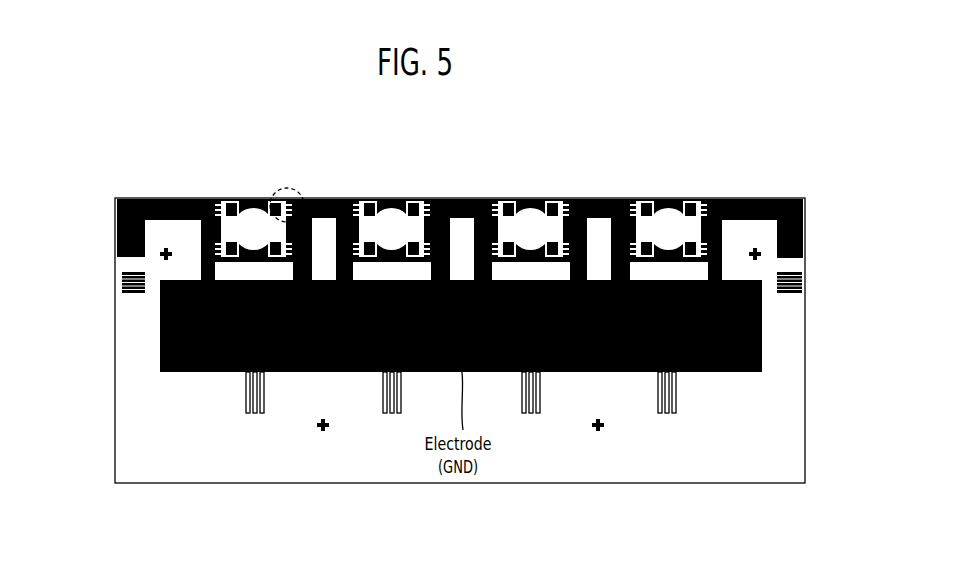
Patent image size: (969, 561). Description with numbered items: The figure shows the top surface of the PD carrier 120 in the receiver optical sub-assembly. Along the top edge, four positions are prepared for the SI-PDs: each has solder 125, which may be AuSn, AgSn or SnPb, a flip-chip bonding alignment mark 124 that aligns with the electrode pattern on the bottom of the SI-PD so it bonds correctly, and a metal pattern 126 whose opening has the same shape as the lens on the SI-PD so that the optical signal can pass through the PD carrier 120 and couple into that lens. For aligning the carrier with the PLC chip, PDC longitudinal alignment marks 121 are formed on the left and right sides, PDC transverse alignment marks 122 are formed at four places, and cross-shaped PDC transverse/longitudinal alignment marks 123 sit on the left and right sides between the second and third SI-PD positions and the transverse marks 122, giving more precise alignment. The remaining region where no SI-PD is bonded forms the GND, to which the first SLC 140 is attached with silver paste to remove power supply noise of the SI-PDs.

The PD carrier 120 is at (463, 483).
The PDC longitudinal alignment mark 121 is at (132, 295).
The PDC transverse alignment mark 122 is at (254, 413).
The PDC transverse/longitudinal alignment mark 123 is at (598, 432).
The flip-chip bonding alignment mark 124 is at (288, 188).
The solder 125 is at (507, 205).
The metal pattern 126 is at (395, 202).
The first SLC 140 is at (705, 372).